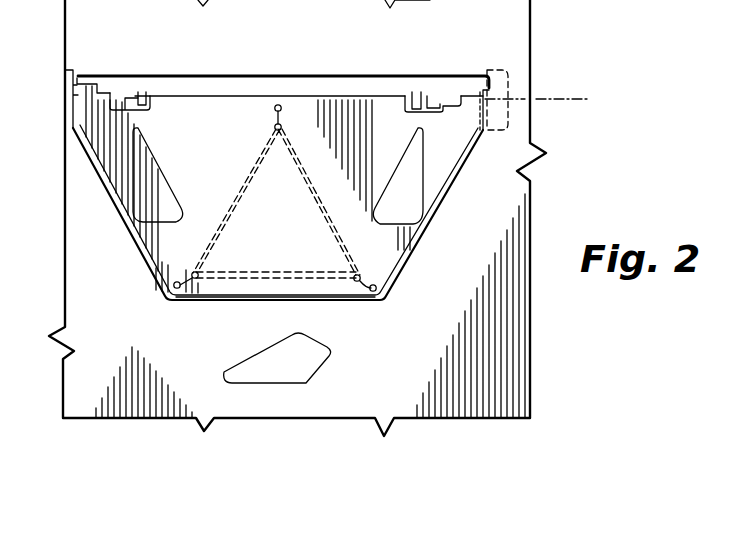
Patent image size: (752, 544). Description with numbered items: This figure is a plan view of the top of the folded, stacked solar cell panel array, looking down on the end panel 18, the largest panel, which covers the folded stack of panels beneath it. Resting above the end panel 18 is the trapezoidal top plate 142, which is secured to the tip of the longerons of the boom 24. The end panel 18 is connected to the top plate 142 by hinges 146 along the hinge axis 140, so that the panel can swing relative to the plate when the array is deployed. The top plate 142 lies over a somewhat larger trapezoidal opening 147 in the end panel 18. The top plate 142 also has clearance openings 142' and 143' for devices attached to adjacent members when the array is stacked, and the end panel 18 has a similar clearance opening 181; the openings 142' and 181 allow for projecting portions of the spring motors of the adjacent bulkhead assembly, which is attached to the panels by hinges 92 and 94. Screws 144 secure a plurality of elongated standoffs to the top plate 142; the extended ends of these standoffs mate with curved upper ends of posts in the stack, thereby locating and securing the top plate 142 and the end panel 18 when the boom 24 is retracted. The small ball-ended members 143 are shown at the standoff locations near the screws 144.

The end panel 18 is at (530, 243).
The clearance opening 181 is at (327, 353).
The boom 24 is at (242, 189).
The hinge 92 is at (423, 98).
The hinge 94 is at (138, 93).
The hinge axis 140 is at (565, 99).
The top plate 142 is at (282, 188).
The clearance opening 142' is at (278, 171).
The contact balls 143 is at (275, 199).
The clearance opening 143' is at (279, 74).
The screws 144 is at (274, 108).
The hinges 146 is at (73, 93).
The trapezoidal opening 147 is at (266, 299).